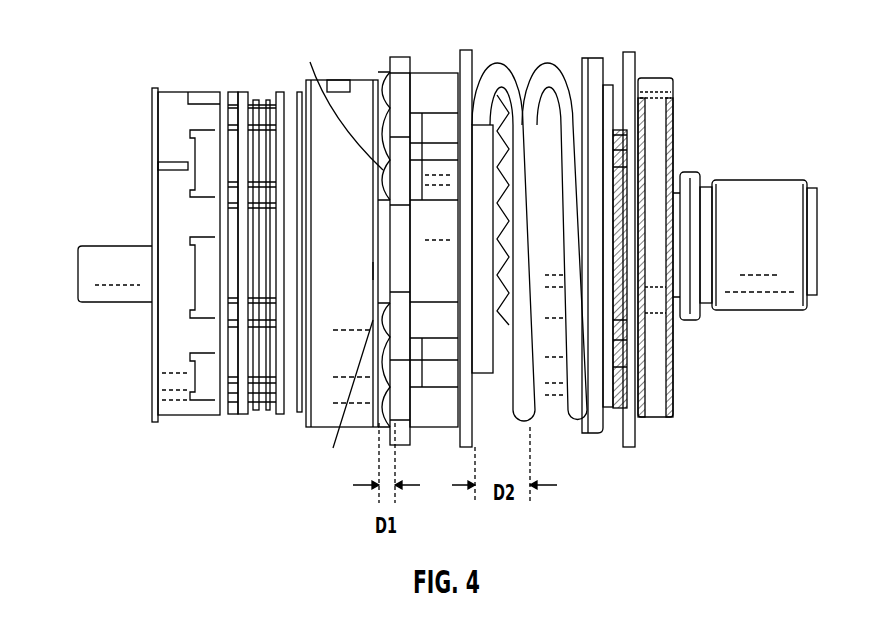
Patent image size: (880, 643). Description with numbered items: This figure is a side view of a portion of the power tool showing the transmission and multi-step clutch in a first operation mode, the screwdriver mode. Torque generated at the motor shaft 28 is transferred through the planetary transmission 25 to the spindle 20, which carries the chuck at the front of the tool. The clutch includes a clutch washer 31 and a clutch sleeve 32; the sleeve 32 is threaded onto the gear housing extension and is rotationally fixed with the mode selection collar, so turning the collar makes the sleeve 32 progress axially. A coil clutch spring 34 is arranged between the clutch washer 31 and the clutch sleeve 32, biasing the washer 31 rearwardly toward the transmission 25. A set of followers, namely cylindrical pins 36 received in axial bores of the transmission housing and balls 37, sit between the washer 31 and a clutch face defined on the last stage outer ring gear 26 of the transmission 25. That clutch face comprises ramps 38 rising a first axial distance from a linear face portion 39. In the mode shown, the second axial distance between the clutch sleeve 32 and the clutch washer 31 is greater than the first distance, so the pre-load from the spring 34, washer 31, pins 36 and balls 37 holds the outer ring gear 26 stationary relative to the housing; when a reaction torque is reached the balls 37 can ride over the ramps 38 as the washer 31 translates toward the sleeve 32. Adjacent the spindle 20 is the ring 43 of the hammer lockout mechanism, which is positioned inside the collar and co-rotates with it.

The spindle 20 is at (690, 178).
The planetary transmission 25 is at (232, 202).
The last stage outer ring gear 26 is at (350, 90).
The motor shaft 28 is at (112, 260).
The clutch washer 31 is at (465, 50).
The clutch sleeve 32 is at (588, 70).
The coil clutch spring 34 is at (550, 77).
The cylindrical pins 36 is at (435, 82).
The balls 37 is at (383, 80).
The ramps 38 is at (333, 263).
The linear face portion 39 is at (373, 270).
The ring 43 is at (652, 82).